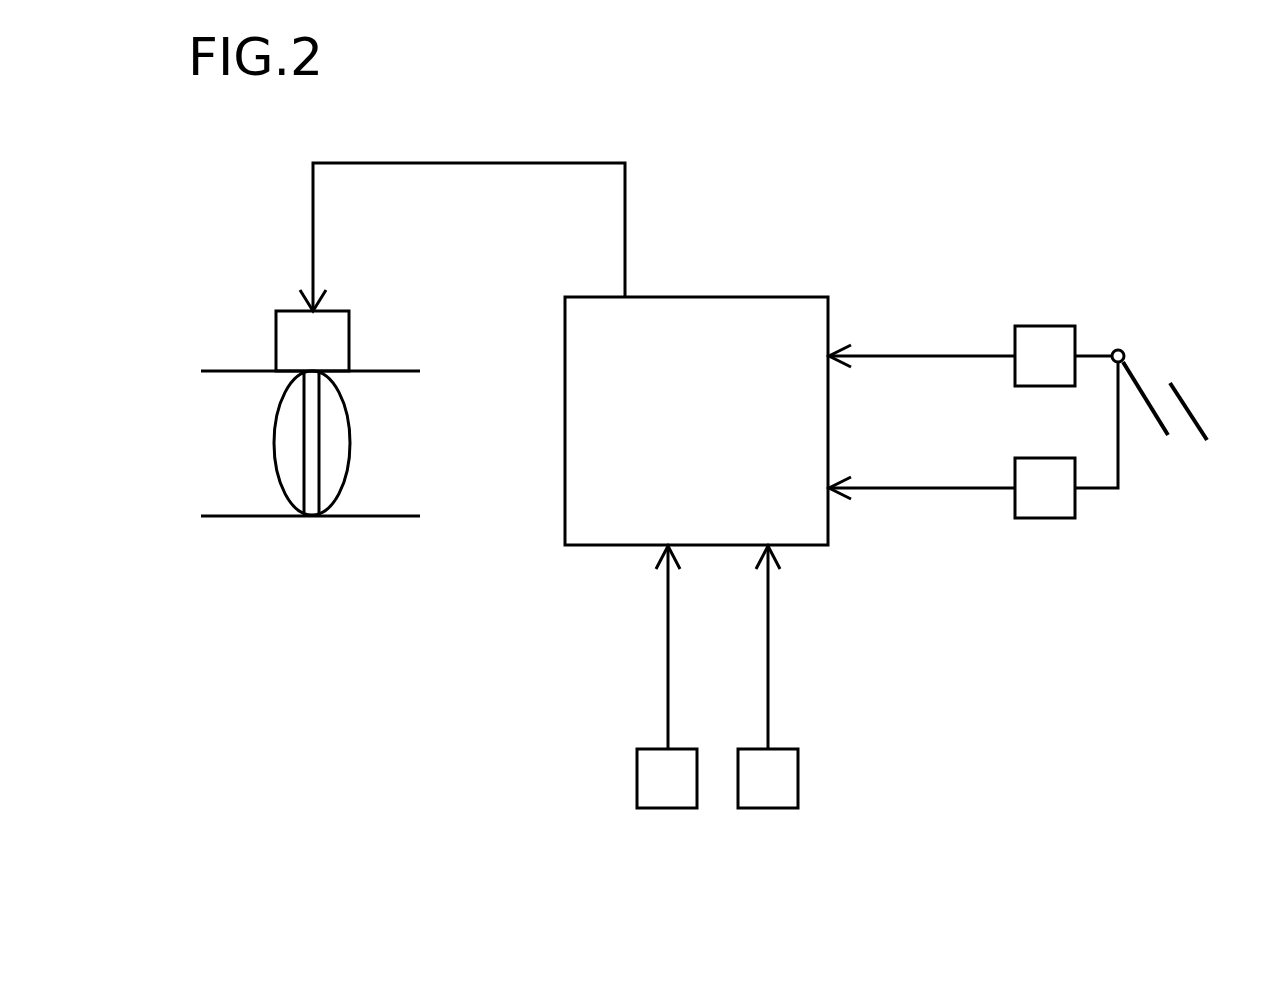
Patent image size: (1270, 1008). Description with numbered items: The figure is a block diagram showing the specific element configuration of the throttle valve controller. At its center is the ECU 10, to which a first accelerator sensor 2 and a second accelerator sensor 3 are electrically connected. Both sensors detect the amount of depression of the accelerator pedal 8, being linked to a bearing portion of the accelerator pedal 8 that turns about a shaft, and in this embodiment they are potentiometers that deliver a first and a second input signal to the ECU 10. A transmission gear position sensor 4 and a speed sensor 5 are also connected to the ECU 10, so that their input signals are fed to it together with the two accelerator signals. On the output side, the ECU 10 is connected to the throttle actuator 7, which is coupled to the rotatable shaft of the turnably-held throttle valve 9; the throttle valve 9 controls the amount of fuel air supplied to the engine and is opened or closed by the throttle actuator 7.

The ECU 10 is at (762, 300).
The throttle actuator 7 is at (276, 352).
The throttle valve 9 is at (350, 433).
The first accelerator sensor 2 is at (1015, 335).
The second accelerator sensor 3 is at (1015, 513).
The accelerator pedal 8 is at (1183, 397).
The transmission gear position sensor 4 is at (665, 808).
The speed sensor 5 is at (772, 808).